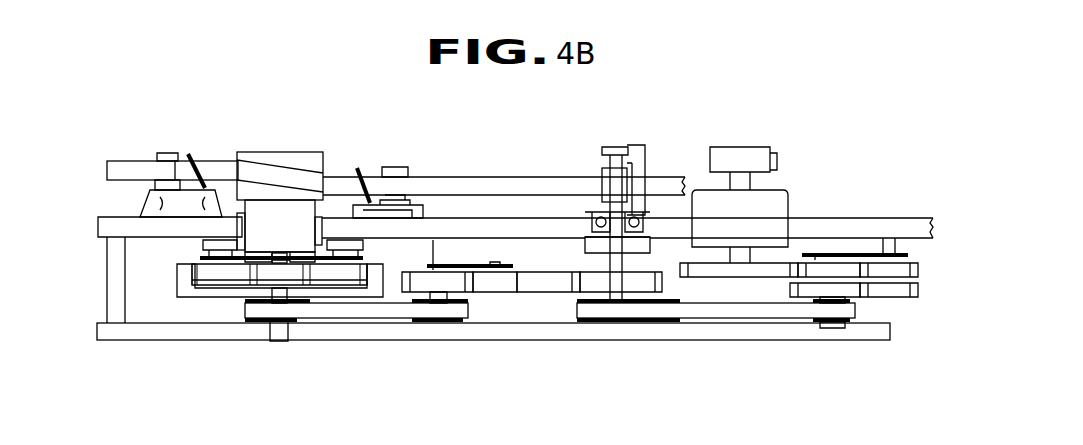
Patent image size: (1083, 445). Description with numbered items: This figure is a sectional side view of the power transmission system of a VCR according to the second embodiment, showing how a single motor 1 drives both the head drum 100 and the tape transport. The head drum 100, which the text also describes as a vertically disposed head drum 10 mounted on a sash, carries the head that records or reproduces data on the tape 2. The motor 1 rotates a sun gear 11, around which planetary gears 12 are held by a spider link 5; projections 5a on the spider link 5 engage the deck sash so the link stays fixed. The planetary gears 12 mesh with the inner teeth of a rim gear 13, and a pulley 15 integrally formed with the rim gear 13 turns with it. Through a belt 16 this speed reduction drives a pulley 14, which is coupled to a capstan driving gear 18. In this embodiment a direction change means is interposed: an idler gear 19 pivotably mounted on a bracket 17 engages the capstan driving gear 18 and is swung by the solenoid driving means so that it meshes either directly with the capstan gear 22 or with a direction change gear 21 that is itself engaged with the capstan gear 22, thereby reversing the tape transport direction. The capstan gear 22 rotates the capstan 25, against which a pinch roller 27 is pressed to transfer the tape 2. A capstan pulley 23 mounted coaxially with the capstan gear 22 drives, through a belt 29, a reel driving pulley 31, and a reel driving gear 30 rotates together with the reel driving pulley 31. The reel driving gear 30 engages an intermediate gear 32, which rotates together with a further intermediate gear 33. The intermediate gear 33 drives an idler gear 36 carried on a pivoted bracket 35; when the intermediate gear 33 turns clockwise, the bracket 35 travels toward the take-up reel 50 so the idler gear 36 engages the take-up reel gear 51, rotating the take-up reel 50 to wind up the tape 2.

The motor 1 is at (270, 215).
The head drum 100 is at (290, 160).
The tape 2 is at (470, 185).
The spider link 5 is at (360, 256).
The projections 5a is at (217, 250).
The head drum 10 is at (152, 318).
The sun gear 11 is at (263, 282).
The planetary gears 12 is at (213, 276).
The rim gear 13 is at (183, 280).
The pulley 14 is at (428, 318).
The pulley 15 is at (300, 342).
The belt 16 is at (357, 313).
The bracket 17 is at (435, 267).
The capstan driving gear 18 is at (450, 280).
The idler gear 19 is at (502, 280).
The direction change gear 21 is at (545, 285).
The capstan gear 22 is at (593, 280).
The capstan pulley 23 is at (613, 318).
The capstan 25 is at (618, 150).
The pinch roller 27 is at (608, 187).
The belt 29 is at (727, 320).
The reel driving gear 30 is at (845, 290).
The reel driving pulley 31 is at (810, 323).
The intermediate gear 32 is at (900, 292).
The intermediate gear 33 is at (905, 271).
The bracket 35 is at (850, 262).
The idler gear 36 is at (795, 276).
The take-up reel 50 is at (777, 207).
The take-up reel gear 51 is at (727, 272).